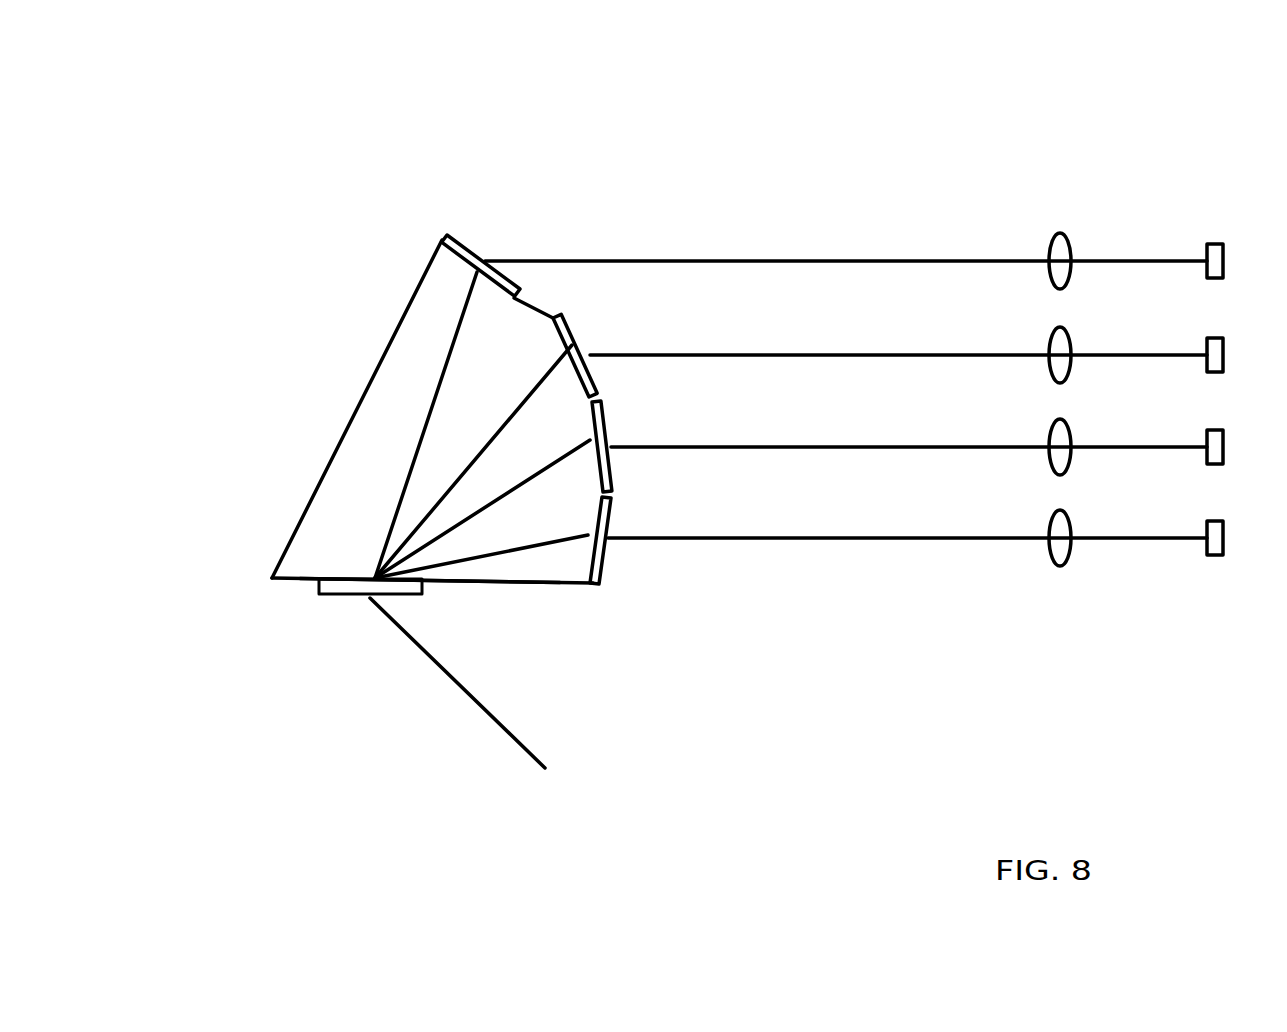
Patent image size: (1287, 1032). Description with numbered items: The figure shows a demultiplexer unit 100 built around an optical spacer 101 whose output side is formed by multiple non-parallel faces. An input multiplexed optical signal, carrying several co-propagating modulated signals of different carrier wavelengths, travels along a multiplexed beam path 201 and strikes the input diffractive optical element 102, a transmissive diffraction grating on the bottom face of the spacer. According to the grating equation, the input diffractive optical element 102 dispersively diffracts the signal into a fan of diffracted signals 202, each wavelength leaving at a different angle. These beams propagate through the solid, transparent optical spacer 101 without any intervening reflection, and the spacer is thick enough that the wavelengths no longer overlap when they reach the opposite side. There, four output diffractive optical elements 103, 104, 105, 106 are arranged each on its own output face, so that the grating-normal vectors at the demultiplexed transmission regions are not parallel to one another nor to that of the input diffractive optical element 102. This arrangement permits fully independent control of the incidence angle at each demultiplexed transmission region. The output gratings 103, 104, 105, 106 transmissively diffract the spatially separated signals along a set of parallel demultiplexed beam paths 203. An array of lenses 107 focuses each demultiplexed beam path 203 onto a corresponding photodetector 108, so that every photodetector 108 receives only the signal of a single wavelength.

The demultiplexer unit 100 is at (278, 402).
The optical spacer 101 is at (552, 570).
The input diffractive optical element 102 is at (342, 588).
The output diffractive optical element 103 is at (470, 247).
The output diffractive optical element 104 is at (573, 340).
The output diffractive optical element 105 is at (608, 468).
The output diffractive optical element 106 is at (603, 573).
The lens 107 is at (1070, 597).
The photodetector 108 is at (1217, 582).
The multiplexed beam path 201 is at (487, 715).
The fan of diffracted signals 202 is at (402, 380).
The demultiplexed beam paths 203 is at (908, 225).